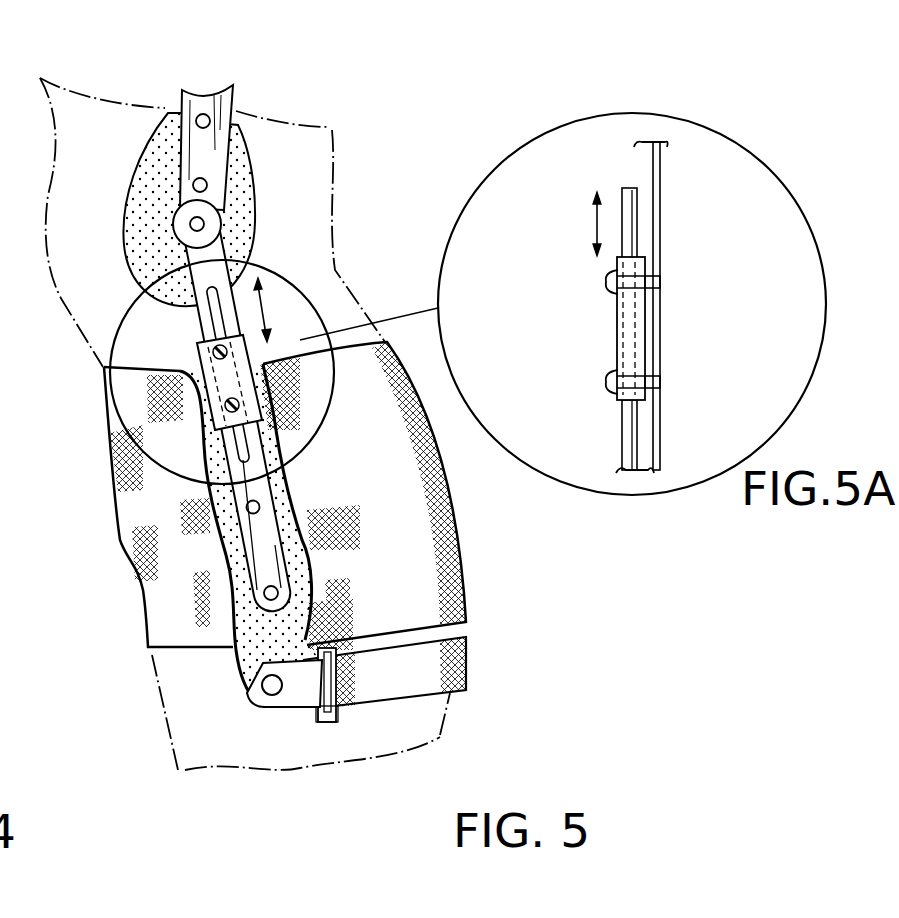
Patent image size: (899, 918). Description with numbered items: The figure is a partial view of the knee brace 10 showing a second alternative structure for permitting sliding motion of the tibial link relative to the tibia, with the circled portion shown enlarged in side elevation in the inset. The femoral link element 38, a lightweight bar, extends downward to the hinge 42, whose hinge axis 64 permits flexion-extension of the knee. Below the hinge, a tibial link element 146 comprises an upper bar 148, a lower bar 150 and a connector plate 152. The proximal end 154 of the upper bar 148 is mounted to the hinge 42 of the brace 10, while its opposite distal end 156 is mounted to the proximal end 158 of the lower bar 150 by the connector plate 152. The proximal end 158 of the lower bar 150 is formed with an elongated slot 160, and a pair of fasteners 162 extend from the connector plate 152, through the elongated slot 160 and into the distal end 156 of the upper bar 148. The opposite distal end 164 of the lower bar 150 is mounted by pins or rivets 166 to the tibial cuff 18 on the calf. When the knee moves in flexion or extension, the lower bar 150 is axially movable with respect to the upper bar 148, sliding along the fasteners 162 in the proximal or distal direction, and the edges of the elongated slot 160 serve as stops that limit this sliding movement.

In FIG. 5, the knee brace 10 is at (252, 68).
In FIG. 5, the tibial cuff 18 is at (215, 560).
In FIG. 5, the femoral link element 38 is at (203, 100).
In FIG. 5, the hinge 42 is at (204, 224).
In FIG. 5, the hinge axis 64 is at (185, 237).
In FIG. 5, the tibial link element 146 is at (176, 345).
In FIG. 5A, the tibial link element 146 is at (707, 223).
In FIG. 5, the upper bar 148 is at (225, 250).
In FIG. 5A, the upper bar 148 is at (661, 172).
In FIG. 5, the lower bar 150 is at (277, 477).
In FIG. 5A, the lower bar 150 is at (645, 464).
In FIG. 5, the connector plate 152 is at (200, 394).
In FIG. 5A, the connector plate 152 is at (617, 330).
In FIG. 5, the proximal end of the upper bar 154 is at (172, 243).
In FIG. 5, the distal end of the upper bar 156 is at (293, 412).
In FIG. 5A, the distal end of the upper bar 156 is at (660, 395).
In FIG. 5, the proximal end of the lower bar 158 is at (235, 283).
In FIG. 5A, the proximal end of the lower bar 158 is at (622, 192).
In FIG. 5, the elongated slot 160 is at (210, 312).
In FIG. 5A, the elongated slot 160 is at (650, 301).
In FIG. 5, the fasteners 162 is at (233, 352).
In FIG. 5A, the fasteners 162 is at (606, 285).
In FIG. 5, the distal end of the lower bar 164 is at (277, 570).
In FIG. 5, the pins or rivets 166 is at (261, 505).